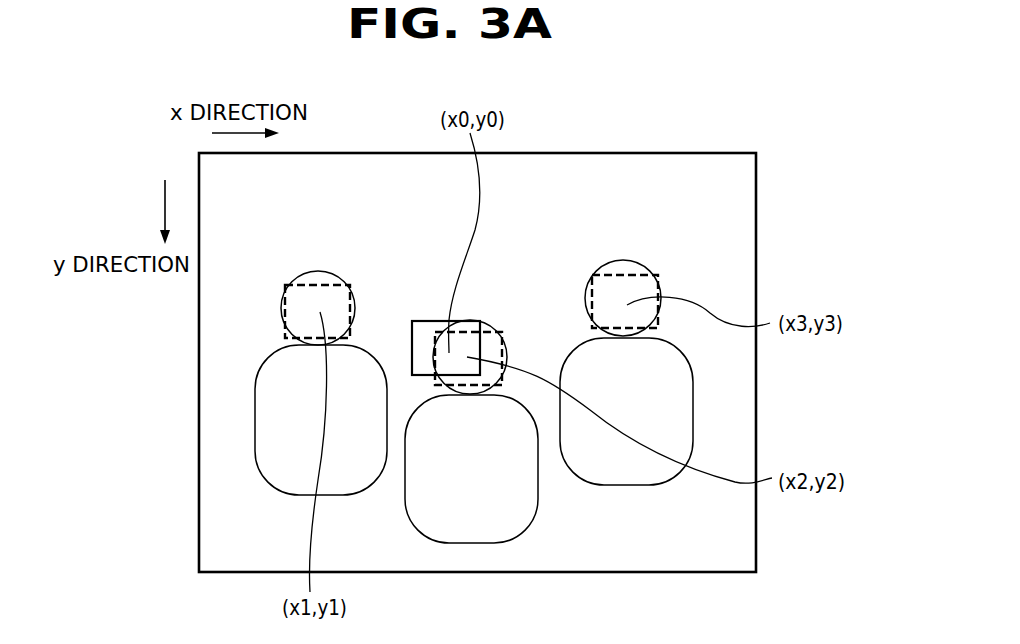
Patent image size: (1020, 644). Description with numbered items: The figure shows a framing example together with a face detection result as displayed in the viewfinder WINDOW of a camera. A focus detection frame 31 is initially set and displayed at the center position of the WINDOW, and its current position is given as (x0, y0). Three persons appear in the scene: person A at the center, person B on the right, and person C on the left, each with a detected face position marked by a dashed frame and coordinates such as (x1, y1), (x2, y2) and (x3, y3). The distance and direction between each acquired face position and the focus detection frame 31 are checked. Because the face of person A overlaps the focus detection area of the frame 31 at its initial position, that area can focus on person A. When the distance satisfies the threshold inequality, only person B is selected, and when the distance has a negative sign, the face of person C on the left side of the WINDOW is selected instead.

The focus detection frame 31 is at (427, 321).
The person A is at (482, 332).
The person B is at (622, 276).
The person C is at (305, 287).
The window WINDOW is at (655, 572).